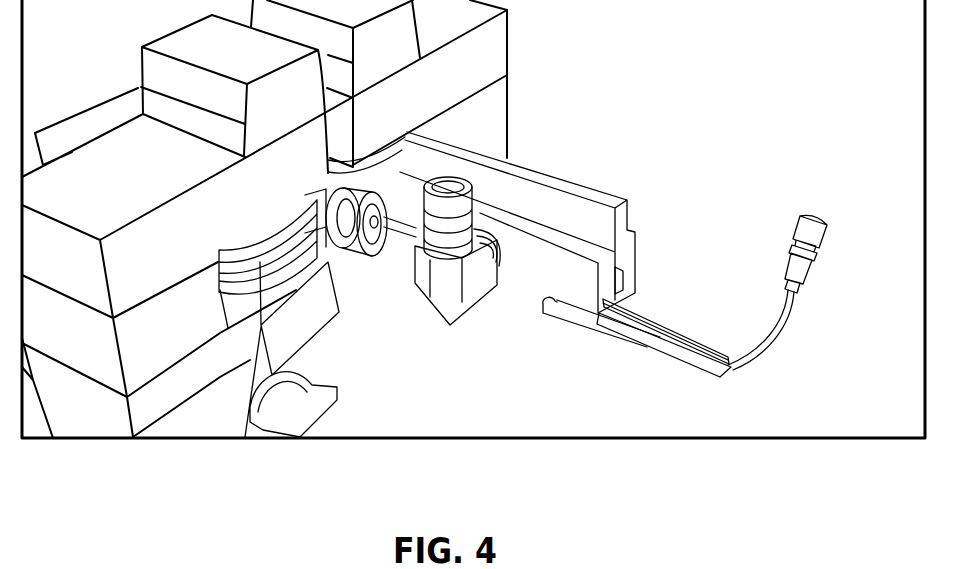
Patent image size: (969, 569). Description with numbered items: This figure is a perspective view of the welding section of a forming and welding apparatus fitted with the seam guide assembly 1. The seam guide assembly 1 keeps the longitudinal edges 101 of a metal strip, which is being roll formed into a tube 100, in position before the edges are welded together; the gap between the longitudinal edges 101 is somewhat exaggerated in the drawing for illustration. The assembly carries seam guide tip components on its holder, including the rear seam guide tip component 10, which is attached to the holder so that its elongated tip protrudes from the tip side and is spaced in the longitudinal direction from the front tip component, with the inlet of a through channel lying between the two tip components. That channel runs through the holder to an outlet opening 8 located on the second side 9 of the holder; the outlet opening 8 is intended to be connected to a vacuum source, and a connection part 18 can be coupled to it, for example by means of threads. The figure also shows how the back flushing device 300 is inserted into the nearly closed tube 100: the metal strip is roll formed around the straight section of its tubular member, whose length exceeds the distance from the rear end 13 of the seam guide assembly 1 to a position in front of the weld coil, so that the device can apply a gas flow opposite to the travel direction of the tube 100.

The seam guide assembly 1 is at (548, 345).
The outlet opening 8 is at (500, 243).
The second side 9 is at (513, 270).
The rear seam guide tip component 10 is at (614, 297).
The rear end 13 is at (623, 262).
The connection part 18 is at (445, 263).
The tube 100 is at (648, 338).
The longitudinal edges 101 is at (688, 338).
The back flushing device 300 is at (792, 326).